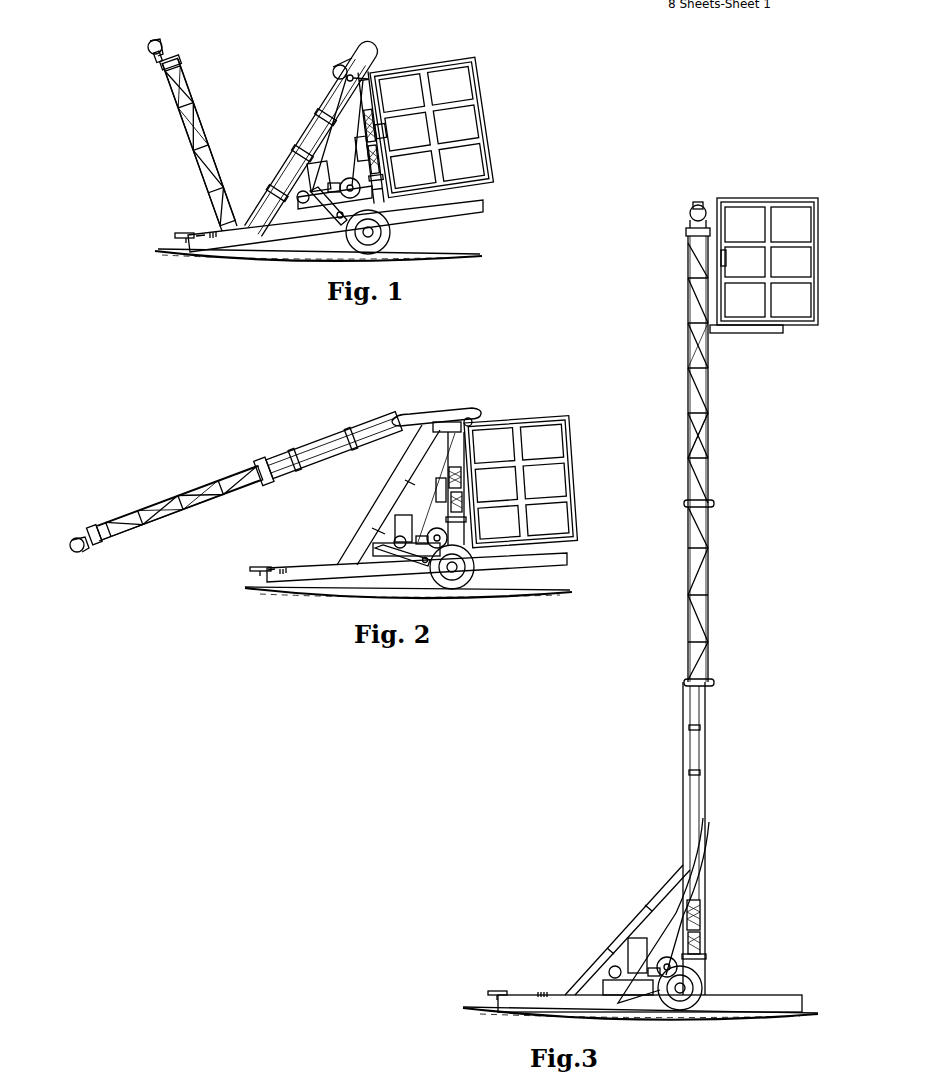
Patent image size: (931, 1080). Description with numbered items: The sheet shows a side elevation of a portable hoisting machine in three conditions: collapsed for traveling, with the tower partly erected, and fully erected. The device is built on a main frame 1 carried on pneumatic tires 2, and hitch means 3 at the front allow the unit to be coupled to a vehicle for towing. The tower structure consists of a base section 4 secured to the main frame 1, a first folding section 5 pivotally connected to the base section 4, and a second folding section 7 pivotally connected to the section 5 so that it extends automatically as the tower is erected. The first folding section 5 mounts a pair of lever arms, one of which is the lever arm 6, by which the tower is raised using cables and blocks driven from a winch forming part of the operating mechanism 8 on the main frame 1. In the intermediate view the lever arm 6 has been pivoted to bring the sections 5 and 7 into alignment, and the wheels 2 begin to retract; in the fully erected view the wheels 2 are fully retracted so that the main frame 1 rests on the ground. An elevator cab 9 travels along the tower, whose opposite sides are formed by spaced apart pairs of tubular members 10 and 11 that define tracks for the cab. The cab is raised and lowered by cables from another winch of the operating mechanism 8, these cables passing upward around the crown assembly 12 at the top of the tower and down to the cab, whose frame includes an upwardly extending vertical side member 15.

In FIG. 1, the main frame 1 is at (458, 205).
In FIG. 3, the main frame 1 is at (724, 1007).
In FIG. 1, the pneumatic tires 2 is at (391, 243).
In FIG. 2, the pneumatic tires 2 is at (463, 580).
In FIG. 3, the pneumatic tires 2 is at (677, 1002).
In FIG. 1, the hitch means 3 is at (180, 232).
In FIG. 2, the hitch means 3 is at (258, 568).
In FIG. 3, the hitch means 3 is at (495, 991).
In FIG. 1, the base section 4 is at (362, 128).
In FIG. 2, the base section 4 is at (447, 472).
In FIG. 3, the base section 4 is at (701, 908).
In FIG. 1, the first folding section 5 is at (281, 151).
In FIG. 2, the first folding section 5 is at (322, 442).
In FIG. 3, the first folding section 5 is at (707, 757).
In FIG. 1, the lever arm 6 is at (350, 58).
In FIG. 2, the lever arm 6 is at (437, 413).
In FIG. 3, the lever arm 6 is at (704, 848).
In FIG. 1, the second folding section 7 is at (204, 121).
In FIG. 2, the second folding section 7 is at (184, 489).
In FIG. 3, the second folding section 7 is at (710, 600).
In FIG. 2, the operating mechanism 8 is at (389, 515).
In FIG. 3, the operating mechanism 8 is at (626, 936).
In FIG. 1, the elevator cab 9 is at (421, 66).
In FIG. 2, the elevator cab 9 is at (514, 420).
In FIG. 3, the elevator cab 9 is at (757, 198).
In FIG. 1, the tubular members 10 is at (200, 162).
In FIG. 2, the tubular members 10 is at (125, 529).
In FIG. 3, the tubular members 10 is at (690, 345).
In FIG. 1, the tubular members 11 is at (208, 168).
In FIG. 2, the tubular members 11 is at (128, 549).
In FIG. 3, the tubular members 11 is at (710, 357).
In FIG. 1, the crown assembly 12 is at (177, 60).
In FIG. 2, the crown assembly 12 is at (81, 549).
In FIG. 3, the crown assembly 12 is at (693, 229).
In FIG. 3, the vertical side member 15 is at (714, 437).